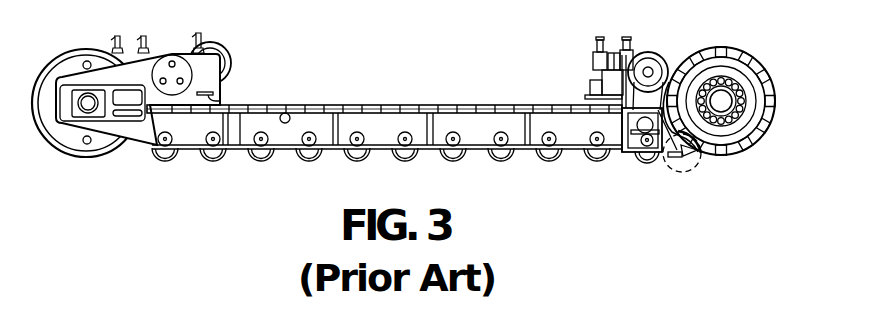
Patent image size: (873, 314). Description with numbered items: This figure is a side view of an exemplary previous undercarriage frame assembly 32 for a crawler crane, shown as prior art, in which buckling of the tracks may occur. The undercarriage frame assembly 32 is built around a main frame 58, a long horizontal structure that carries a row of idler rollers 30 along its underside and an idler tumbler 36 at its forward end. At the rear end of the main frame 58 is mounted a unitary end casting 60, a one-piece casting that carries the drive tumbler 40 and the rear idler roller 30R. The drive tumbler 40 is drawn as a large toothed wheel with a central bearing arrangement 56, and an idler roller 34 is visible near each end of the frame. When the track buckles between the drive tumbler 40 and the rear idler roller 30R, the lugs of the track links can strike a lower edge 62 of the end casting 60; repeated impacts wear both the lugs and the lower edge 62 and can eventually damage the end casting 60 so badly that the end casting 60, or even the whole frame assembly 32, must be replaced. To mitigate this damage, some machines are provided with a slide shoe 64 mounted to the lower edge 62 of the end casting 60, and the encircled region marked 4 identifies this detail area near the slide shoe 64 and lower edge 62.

The idler tumbler 36 is at (72, 65).
The idler roller 34 is at (229, 52).
The undercarriage frame assembly 32 is at (291, 86).
The main frame 58 is at (393, 104).
The idler rollers 30 is at (256, 159).
The unitary end casting 60 is at (657, 120).
The rear idler roller 30R is at (644, 161).
The drive tumbler 40 is at (740, 72).
The wheel bearing 56 is at (775, 110).
The lower edge 62 is at (683, 160).
The slide shoe 64 is at (698, 156).
The section detail circle 4 is at (668, 165).